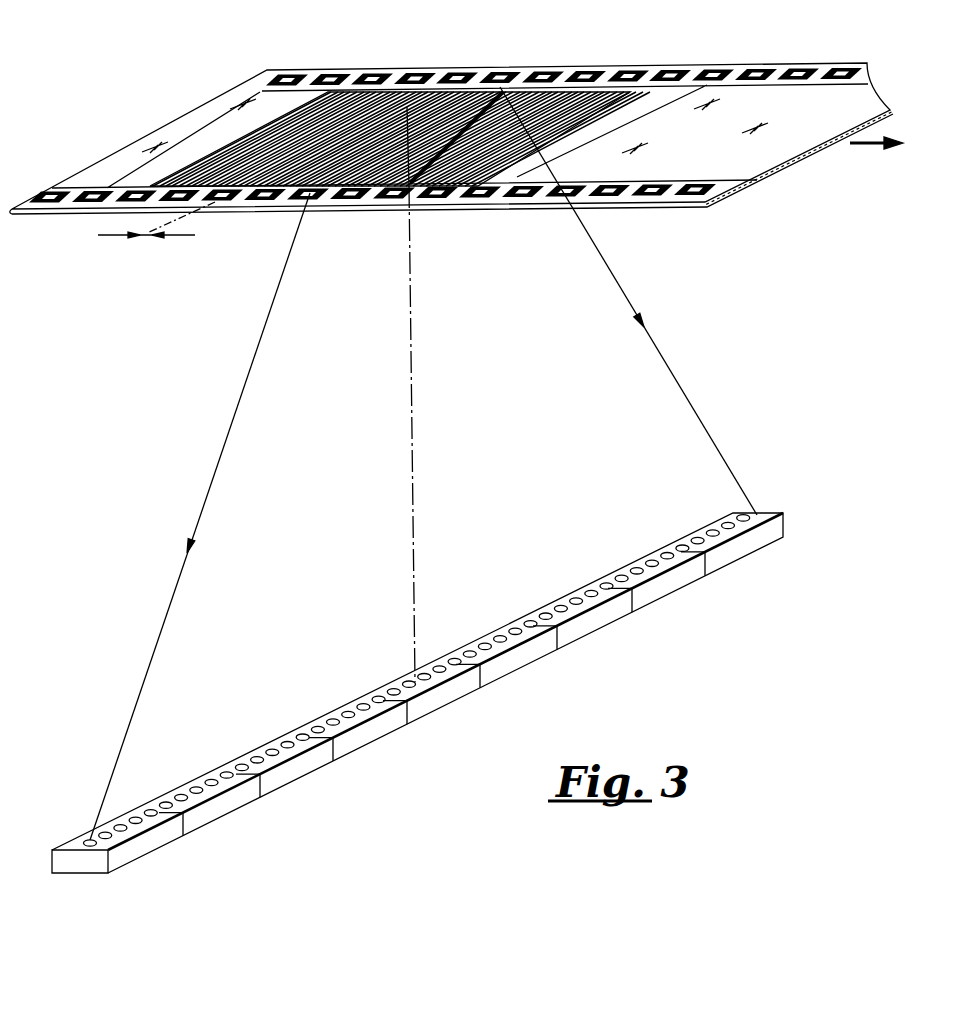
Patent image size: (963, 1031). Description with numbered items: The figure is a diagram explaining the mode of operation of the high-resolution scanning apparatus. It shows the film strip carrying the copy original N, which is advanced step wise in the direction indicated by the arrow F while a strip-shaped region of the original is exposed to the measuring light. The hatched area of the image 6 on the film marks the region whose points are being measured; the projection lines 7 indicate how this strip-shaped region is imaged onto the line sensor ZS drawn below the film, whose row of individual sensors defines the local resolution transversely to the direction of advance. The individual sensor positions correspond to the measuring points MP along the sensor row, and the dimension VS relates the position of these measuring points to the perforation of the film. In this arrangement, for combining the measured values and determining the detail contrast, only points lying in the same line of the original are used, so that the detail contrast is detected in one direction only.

The copy original N is at (567, 93).
The image frame 6 is at (475, 97).
The projection line / scanning beam 7 is at (607, 287).
The offset between perforation and measuring point VS is at (143, 237).
The film transport direction F is at (872, 156).
The sensor bar ZS is at (522, 612).
The measuring points MP is at (355, 712).